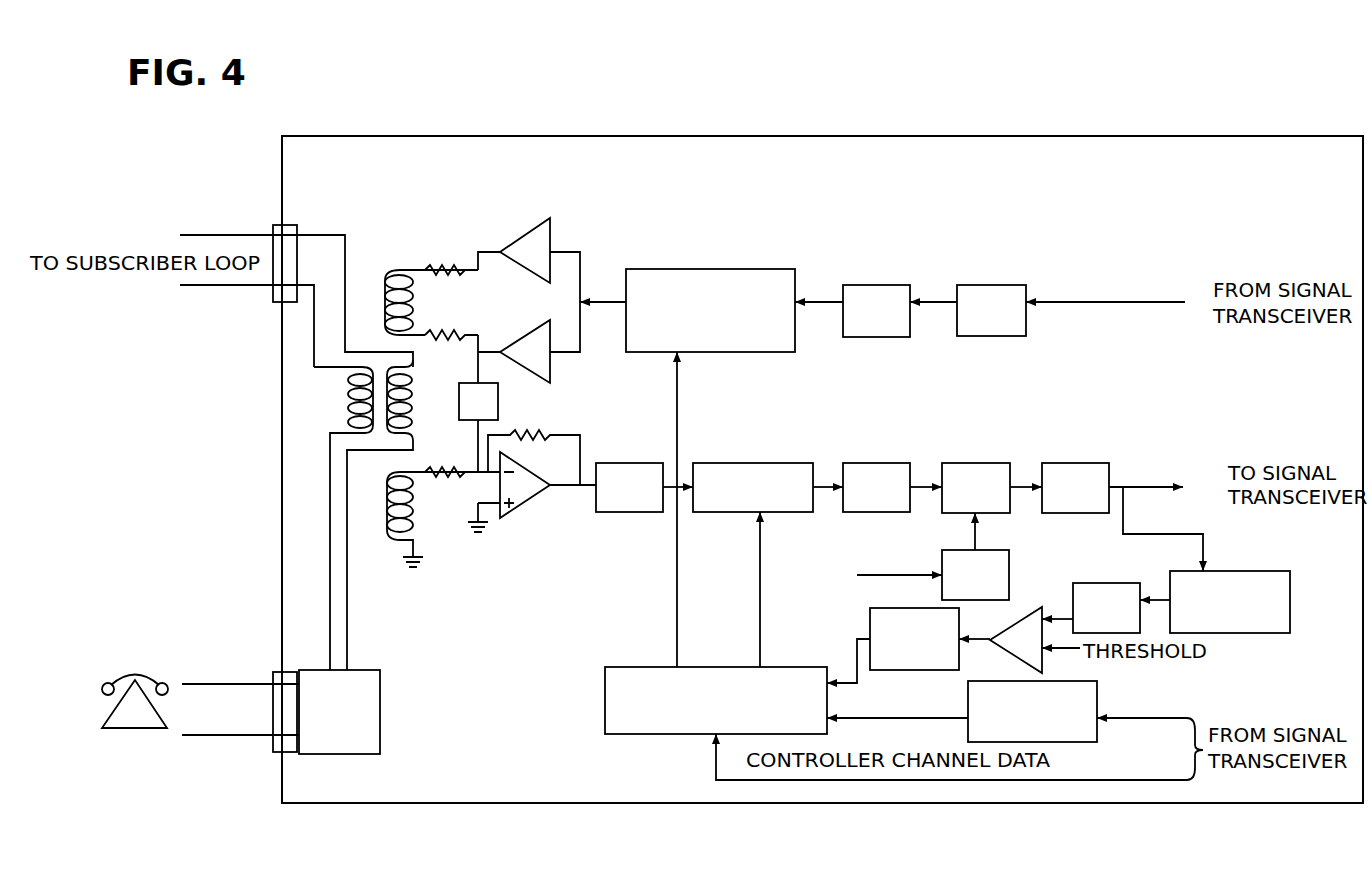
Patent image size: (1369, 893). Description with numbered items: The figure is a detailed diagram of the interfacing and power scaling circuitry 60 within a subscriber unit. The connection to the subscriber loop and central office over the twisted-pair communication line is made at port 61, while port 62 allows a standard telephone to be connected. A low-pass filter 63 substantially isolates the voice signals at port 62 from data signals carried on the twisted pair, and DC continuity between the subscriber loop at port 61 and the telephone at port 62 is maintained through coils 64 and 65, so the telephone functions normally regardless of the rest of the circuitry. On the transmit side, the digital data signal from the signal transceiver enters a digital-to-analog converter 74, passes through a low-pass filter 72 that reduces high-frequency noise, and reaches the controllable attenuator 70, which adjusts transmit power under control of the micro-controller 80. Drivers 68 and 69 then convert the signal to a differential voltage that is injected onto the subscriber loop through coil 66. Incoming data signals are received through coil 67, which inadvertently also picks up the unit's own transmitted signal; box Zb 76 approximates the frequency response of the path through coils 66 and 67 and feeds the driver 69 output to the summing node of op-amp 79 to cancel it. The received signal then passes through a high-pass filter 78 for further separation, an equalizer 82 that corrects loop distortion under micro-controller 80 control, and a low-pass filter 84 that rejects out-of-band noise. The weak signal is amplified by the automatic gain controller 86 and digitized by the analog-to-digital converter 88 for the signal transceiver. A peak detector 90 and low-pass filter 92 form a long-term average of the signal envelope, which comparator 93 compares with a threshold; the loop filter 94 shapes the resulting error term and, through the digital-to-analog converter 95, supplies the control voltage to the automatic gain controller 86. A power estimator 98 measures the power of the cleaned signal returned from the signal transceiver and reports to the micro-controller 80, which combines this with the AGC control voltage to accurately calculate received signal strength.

The interfacing and power scaling circuitry 60 is at (836, 136).
The port 61 is at (274, 224).
The port 62 is at (274, 672).
The low-pass filter 63 is at (380, 672).
The coil 64 is at (350, 398).
The coil 65 is at (412, 390).
The coil 66 is at (387, 290).
The coil 67 is at (387, 492).
The driver 68 is at (512, 235).
The driver 69 is at (522, 330).
The controllable attenuator 70 is at (700, 269).
The low-pass filter 72 is at (868, 285).
The digital-to-analog converter 74 is at (978, 285).
The box Zb 76 is at (498, 400).
The high-pass filter 78 is at (640, 463).
The op-amp 79 is at (528, 505).
The micro-controller 80 is at (745, 667).
The equalizer 82 is at (770, 463).
The low-pass filter 84 is at (875, 463).
The automatic gain controller 86 is at (965, 463).
The analog-to-digital converter 88 is at (1053, 463).
The peak detector 90 is at (1265, 571).
The low-pass filter 92 is at (1103, 583).
The comparator 93 is at (1020, 620).
The loop filter 94 is at (876, 608).
The digital-to-analog converter 95 is at (1009, 575).
The power estimator 98 is at (1097, 700).